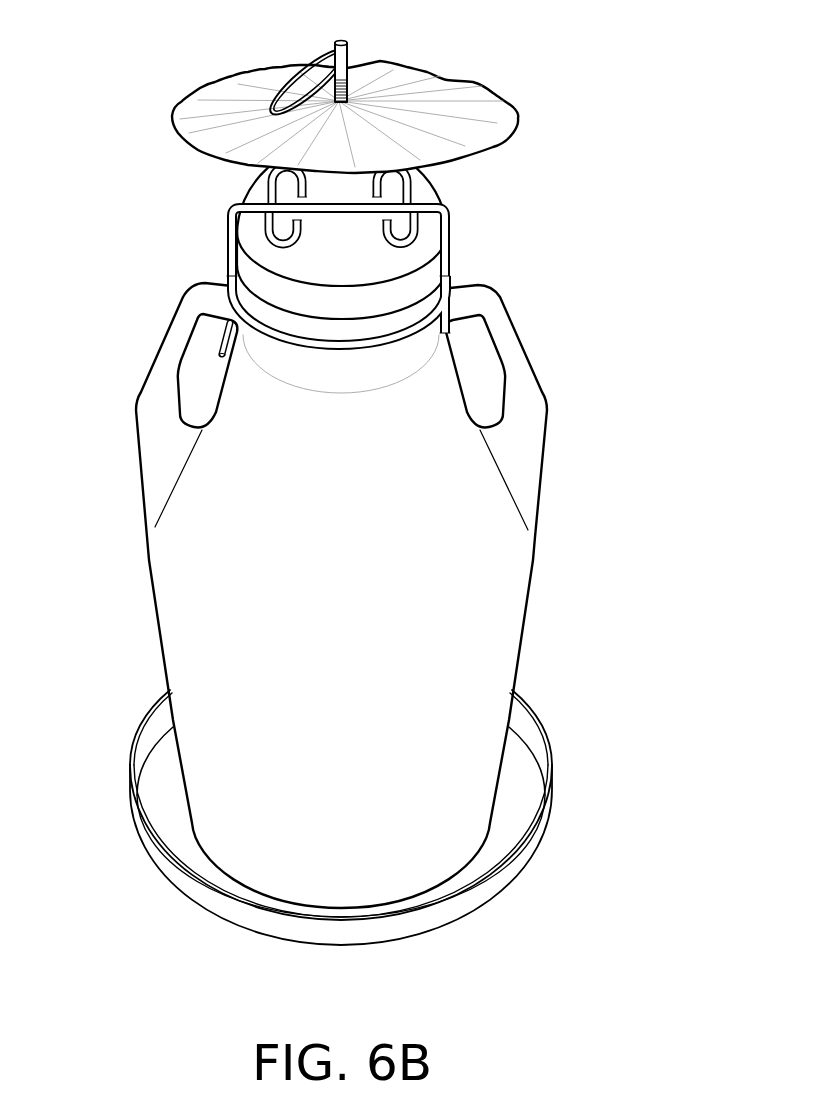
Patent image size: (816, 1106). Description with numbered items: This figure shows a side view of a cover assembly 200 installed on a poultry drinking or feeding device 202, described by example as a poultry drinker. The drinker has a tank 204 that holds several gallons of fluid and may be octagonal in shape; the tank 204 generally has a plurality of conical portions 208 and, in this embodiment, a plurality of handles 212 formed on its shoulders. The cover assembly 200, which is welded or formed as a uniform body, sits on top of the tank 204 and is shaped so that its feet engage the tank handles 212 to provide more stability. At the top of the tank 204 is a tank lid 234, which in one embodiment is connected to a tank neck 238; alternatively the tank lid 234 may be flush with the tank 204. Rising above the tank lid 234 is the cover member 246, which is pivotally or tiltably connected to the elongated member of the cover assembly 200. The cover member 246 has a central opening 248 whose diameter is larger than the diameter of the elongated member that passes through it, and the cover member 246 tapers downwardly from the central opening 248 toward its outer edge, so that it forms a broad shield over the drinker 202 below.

The cover assembly 200 is at (353, 473).
The poultry drinking or feeding device 202 is at (353, 614).
The tank 204 is at (247, 524).
The conical portions 208 is at (400, 313).
The handles 212 is at (158, 400).
The tank lid 234 is at (277, 281).
The tank neck 238 is at (358, 365).
The cover member 246 is at (483, 100).
The central opening 248 is at (415, 78).